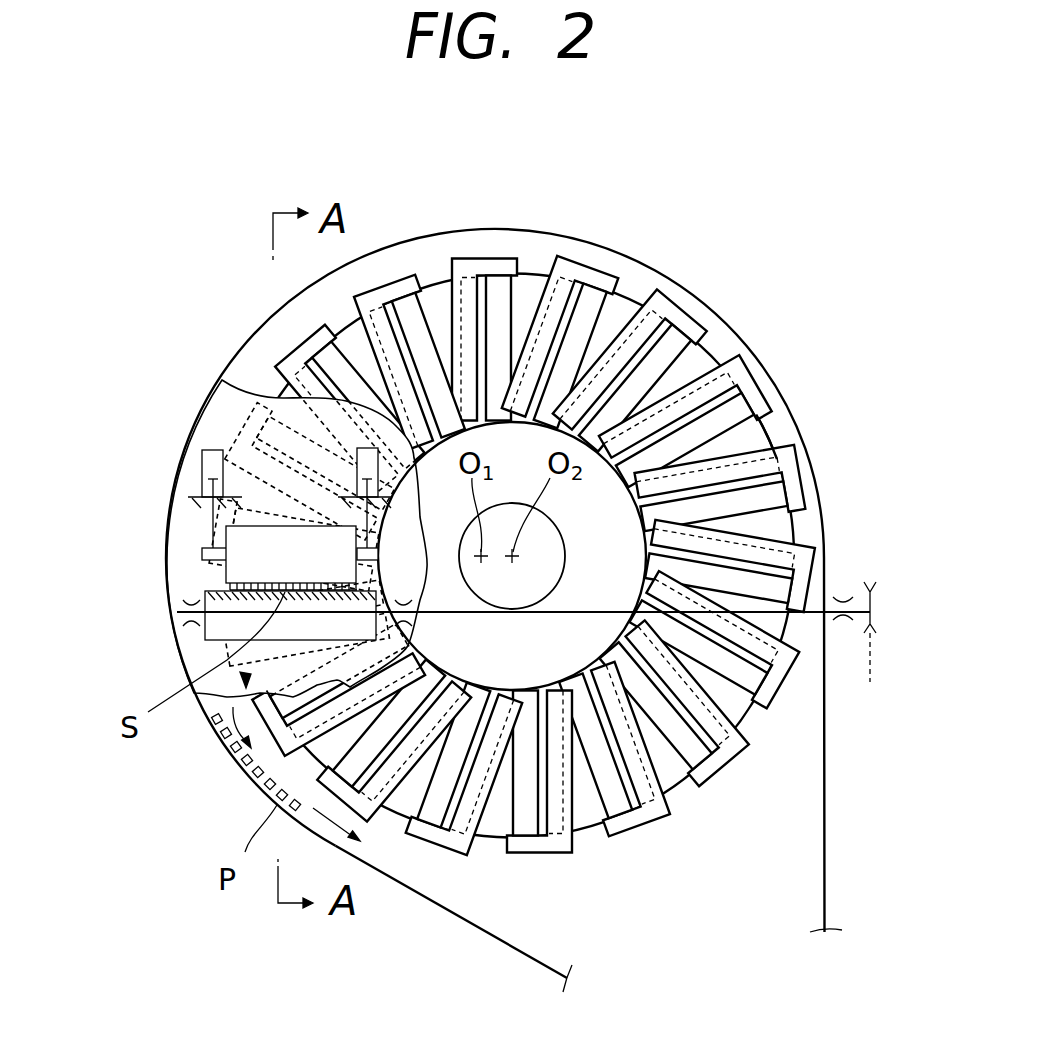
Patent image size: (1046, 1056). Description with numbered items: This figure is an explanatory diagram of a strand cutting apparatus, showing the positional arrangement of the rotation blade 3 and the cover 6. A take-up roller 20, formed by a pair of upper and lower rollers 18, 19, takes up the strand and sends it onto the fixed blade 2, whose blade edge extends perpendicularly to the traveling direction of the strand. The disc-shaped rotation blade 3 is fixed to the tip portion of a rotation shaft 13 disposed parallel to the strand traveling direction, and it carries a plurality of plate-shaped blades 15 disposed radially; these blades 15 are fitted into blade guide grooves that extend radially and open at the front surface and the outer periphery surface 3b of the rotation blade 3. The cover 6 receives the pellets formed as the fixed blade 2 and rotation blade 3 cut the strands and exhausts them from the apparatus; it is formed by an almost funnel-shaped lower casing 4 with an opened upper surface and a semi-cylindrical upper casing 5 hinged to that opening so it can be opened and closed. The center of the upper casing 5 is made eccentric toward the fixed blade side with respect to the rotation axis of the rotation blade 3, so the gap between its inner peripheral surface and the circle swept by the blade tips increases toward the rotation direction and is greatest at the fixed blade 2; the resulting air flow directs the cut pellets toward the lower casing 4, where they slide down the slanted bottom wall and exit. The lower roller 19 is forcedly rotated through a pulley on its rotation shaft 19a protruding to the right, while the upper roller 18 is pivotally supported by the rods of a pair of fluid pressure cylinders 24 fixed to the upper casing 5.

The fixed blade 2 is at (206, 592).
The rotation blade 3 is at (700, 350).
The outer periphery surface 3b is at (768, 430).
The lower casing 4 is at (457, 920).
The upper casing 5 is at (573, 233).
The cover 6 is at (640, 240).
The rotation shaft 13 is at (607, 517).
The plate-shaped blade 15 is at (462, 258).
The upper roller 18 is at (228, 540).
The lower roller 19 is at (204, 632).
The rotation shaft 19a is at (600, 607).
The take-up roller 20 is at (206, 510).
The fluid pressure cylinder 24 is at (360, 440).